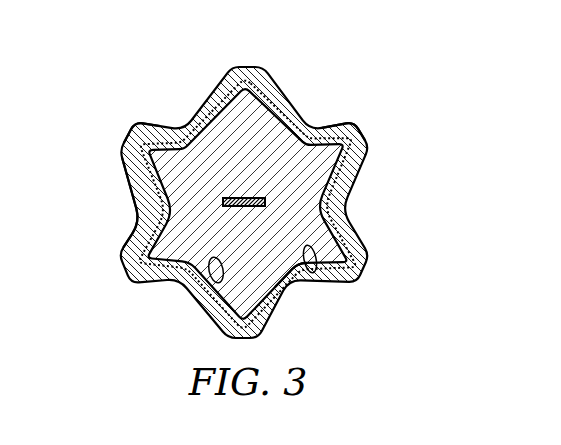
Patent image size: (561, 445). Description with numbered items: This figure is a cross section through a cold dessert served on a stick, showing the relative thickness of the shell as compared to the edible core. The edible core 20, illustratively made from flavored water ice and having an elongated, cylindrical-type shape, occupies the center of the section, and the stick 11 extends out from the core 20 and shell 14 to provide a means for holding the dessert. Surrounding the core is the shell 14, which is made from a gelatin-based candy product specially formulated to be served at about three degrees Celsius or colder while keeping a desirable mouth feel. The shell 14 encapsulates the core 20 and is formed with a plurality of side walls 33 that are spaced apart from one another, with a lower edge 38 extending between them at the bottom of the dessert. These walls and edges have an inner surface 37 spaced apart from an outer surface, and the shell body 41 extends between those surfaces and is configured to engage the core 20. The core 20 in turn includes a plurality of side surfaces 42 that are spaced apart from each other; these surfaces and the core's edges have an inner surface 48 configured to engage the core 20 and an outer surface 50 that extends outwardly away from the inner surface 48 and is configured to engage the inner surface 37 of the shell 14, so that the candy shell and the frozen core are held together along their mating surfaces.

The shell 14 is at (280, 222).
The side walls 33 is at (250, 65).
The lower edge 38 is at (150, 123).
The shell body 41 is at (349, 123).
The inner surface 37 is at (150, 181).
The edible core 20 is at (291, 214).
The stick 11 is at (243, 208).
The side surfaces 42 is at (314, 272).
The inner surface 48 is at (210, 284).
The outer surface 50 is at (277, 279).